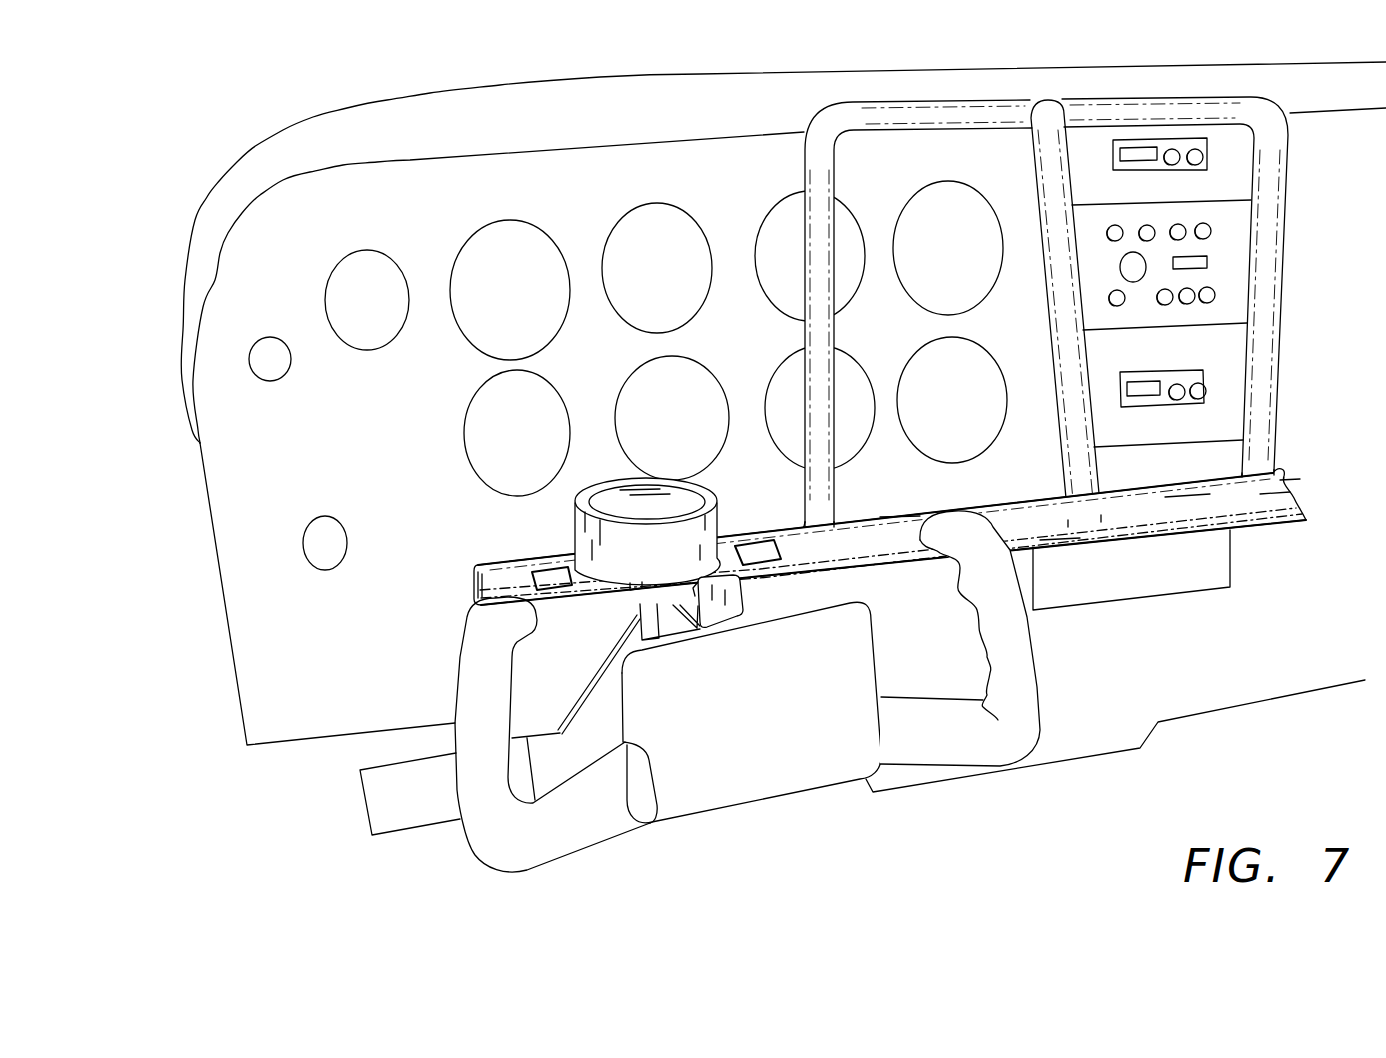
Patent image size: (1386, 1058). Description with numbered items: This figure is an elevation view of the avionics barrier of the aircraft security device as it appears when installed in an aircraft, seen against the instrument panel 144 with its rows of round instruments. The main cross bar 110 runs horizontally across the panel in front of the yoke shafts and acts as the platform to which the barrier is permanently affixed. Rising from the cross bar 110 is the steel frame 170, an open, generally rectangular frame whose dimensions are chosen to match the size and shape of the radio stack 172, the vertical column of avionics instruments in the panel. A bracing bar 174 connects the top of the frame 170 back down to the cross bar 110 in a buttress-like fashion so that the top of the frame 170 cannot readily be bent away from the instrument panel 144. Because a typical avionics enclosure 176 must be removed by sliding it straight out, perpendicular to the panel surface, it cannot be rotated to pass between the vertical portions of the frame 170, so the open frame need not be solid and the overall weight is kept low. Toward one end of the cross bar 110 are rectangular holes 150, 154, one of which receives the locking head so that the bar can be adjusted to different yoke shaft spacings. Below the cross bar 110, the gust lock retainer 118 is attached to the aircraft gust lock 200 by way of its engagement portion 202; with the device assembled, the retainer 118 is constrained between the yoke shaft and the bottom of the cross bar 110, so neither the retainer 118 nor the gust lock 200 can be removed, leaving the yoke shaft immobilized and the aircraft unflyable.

The main cross bar 110 is at (1257, 498).
The gust lock retainer 118 is at (730, 605).
The instrument panel 144 is at (1228, 697).
The rectangular hole 150 is at (550, 577).
The rectangular hole 154 is at (753, 548).
The steel frame 170 is at (1023, 113).
The radio stack 172 is at (1198, 577).
The bracing bar 174 is at (1050, 177).
The avionics enclosure 176 is at (1223, 237).
The gust lock 200 is at (420, 810).
The engagement portion 202 is at (573, 702).